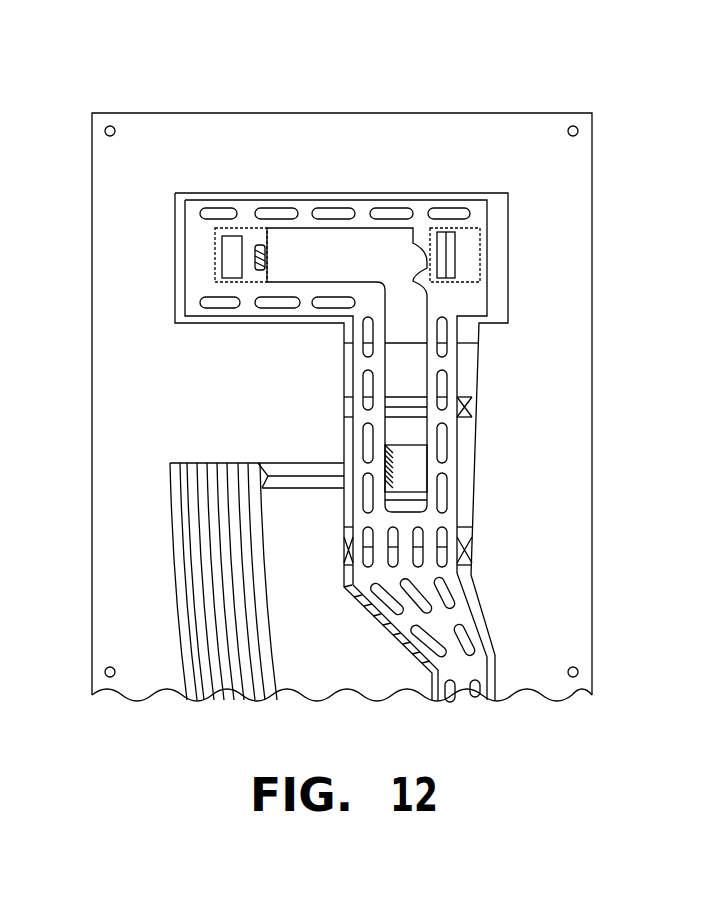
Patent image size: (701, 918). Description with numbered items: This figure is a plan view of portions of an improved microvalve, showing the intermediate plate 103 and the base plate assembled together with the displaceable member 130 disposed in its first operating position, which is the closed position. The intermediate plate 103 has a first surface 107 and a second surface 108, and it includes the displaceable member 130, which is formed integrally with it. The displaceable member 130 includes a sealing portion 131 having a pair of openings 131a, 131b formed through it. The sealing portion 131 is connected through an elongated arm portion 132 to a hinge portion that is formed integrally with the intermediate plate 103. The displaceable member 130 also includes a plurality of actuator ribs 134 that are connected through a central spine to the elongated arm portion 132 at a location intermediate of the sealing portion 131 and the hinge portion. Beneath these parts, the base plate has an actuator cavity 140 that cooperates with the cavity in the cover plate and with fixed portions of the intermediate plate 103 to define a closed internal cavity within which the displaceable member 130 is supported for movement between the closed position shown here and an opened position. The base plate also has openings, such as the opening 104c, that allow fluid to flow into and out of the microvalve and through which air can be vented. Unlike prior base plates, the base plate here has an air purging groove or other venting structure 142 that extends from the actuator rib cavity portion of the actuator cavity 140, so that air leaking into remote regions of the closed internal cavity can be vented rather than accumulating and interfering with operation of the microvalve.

The intermediate plate 103 is at (378, 112).
The first surface 107 is at (550, 400).
The second surface 108 is at (562, 520).
The actuator cavity 140 is at (498, 214).
The sealing portion 131 is at (197, 252).
The opening 131a is at (232, 247).
The opening 131b is at (445, 256).
The displaceable member 130 is at (470, 368).
The opening 104c is at (407, 477).
The elongated arm portion 132 is at (442, 575).
The actuator ribs 134 is at (258, 610).
The air purging groove or venting structure 142 is at (298, 468).